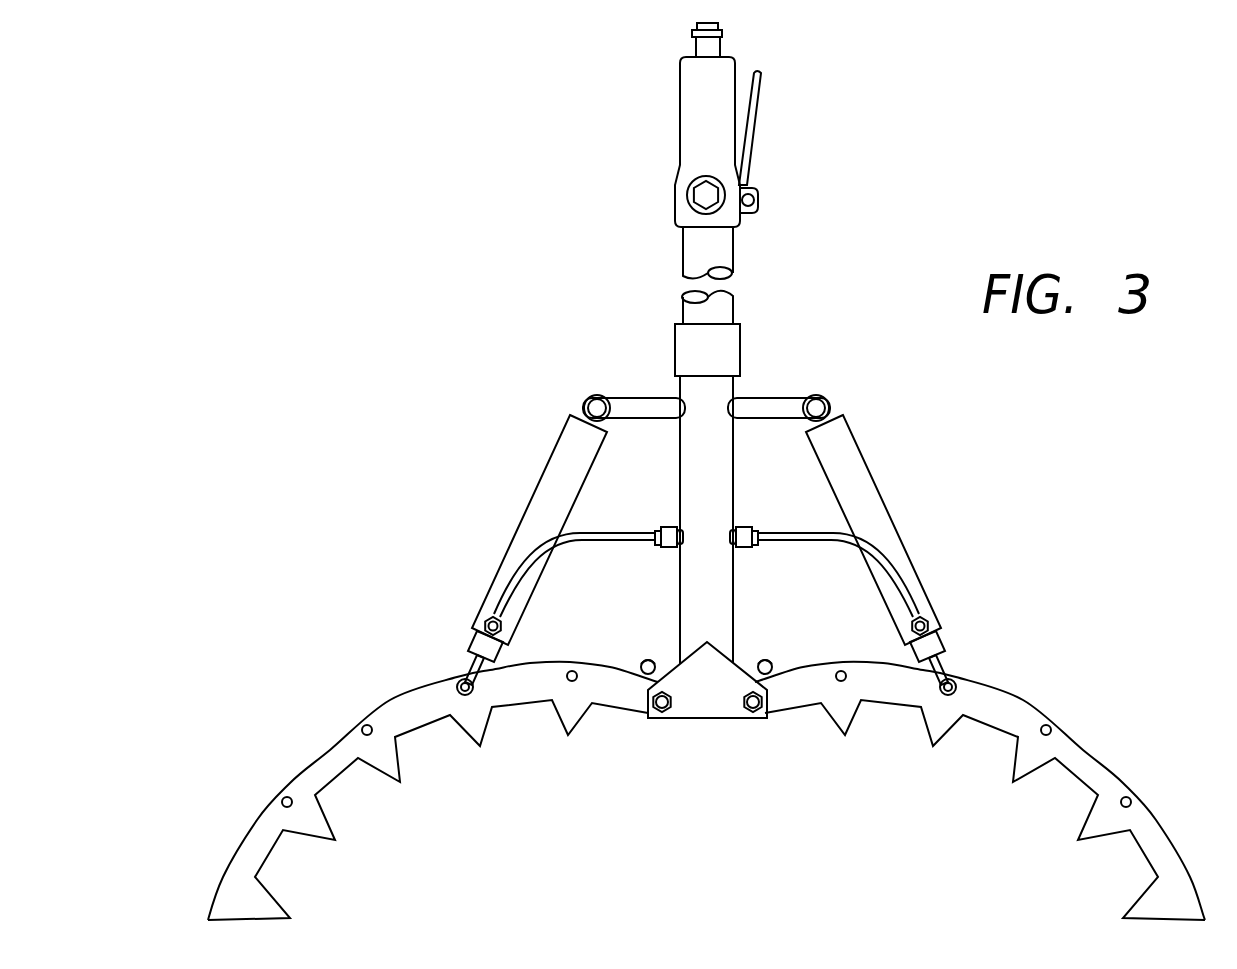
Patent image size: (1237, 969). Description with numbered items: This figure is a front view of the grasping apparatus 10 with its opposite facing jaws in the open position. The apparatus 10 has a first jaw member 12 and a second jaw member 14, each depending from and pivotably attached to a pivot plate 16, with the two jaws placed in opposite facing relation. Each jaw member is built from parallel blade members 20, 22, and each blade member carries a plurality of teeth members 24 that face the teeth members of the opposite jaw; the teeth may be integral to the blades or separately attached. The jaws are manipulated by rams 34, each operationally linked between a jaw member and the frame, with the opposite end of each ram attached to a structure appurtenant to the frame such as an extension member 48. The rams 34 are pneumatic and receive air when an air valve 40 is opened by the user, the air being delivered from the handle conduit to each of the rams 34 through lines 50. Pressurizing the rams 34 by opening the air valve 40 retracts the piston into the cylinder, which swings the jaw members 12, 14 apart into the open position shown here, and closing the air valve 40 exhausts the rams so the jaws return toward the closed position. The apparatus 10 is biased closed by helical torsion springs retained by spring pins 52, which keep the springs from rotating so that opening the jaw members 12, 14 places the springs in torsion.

The apparatus 10 is at (415, 214).
The first jaw member 12 is at (318, 736).
The second jaw member 14 is at (1095, 736).
The pivot plate 16 is at (703, 700).
The blade member 20 is at (395, 708).
The blade member 22 is at (1022, 705).
The teeth members 24 is at (320, 833).
The ram 34 is at (528, 482).
The air valve 40 is at (672, 108).
The extension member 48 is at (627, 404).
The lines 50 is at (637, 535).
The spring pin 52 is at (645, 658).